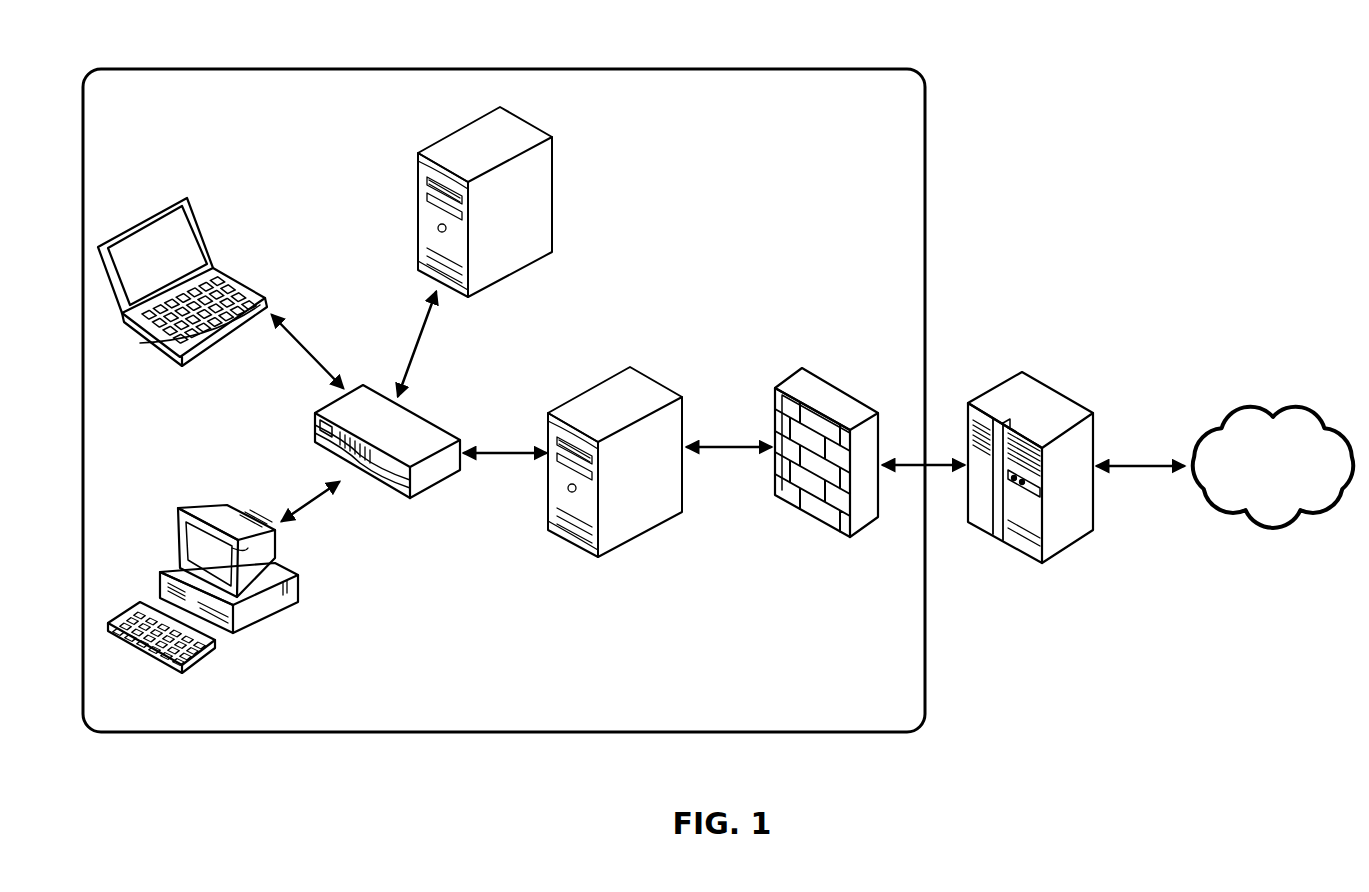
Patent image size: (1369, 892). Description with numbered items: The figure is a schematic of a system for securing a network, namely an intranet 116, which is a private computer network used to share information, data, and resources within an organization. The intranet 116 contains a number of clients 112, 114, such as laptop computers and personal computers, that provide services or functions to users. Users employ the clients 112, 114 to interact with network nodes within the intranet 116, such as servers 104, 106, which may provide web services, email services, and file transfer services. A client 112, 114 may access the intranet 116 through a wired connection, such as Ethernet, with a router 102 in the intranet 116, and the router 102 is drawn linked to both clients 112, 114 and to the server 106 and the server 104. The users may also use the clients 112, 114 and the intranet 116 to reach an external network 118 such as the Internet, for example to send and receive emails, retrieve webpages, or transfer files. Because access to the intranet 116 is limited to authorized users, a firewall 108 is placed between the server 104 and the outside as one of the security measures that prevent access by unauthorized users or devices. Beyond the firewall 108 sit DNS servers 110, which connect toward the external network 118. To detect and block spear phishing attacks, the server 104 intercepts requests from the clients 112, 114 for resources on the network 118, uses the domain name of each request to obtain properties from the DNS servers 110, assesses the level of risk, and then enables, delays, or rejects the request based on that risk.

The router 102 is at (387, 473).
The server 104 is at (615, 493).
The server 106 is at (485, 233).
The firewall 108 is at (826, 485).
The domain name system (DNS) servers 110 is at (1032, 499).
The client 112 is at (182, 308).
The client 114 is at (203, 615).
The intranet 116 is at (504, 400).
The external network 118 is at (1273, 467).